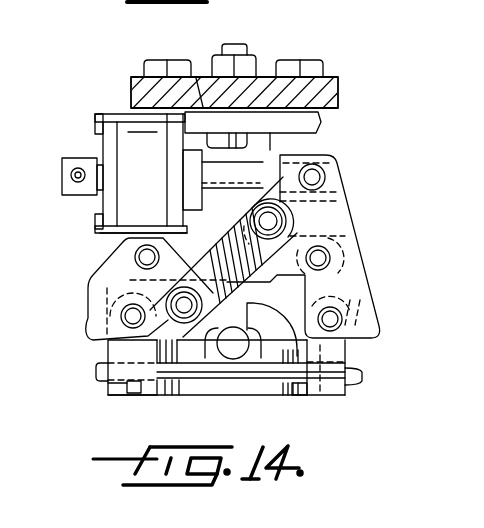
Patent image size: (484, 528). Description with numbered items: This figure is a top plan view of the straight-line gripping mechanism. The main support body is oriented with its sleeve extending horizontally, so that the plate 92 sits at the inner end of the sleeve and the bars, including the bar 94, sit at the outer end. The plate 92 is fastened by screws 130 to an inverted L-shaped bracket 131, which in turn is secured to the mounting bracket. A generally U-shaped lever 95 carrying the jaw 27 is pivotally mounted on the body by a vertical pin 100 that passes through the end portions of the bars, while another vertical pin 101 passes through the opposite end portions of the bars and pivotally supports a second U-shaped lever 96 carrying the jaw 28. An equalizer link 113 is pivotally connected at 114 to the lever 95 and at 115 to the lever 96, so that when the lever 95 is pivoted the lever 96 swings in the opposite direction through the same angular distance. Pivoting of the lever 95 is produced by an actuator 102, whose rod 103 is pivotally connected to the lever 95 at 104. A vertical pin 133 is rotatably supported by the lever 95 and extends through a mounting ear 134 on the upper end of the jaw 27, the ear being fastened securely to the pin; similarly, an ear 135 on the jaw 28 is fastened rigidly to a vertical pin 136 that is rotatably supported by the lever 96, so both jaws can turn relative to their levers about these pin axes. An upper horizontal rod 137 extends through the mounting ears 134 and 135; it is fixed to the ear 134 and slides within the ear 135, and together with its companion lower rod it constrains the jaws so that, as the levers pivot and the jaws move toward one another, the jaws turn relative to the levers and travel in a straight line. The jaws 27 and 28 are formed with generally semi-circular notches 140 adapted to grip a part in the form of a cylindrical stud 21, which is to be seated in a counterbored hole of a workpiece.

The screws 130 is at (253, 62).
The inverted L-shaped bracket 131 is at (200, 83).
The actuator 102 is at (124, 108).
The plate 92 is at (338, 92).
The rod 103 is at (257, 200).
The pivotal connection 104 is at (332, 165).
The bar 94 is at (172, 231).
The equalizer link 113 is at (214, 253).
The pivotal connection 114 is at (286, 219).
The U-shaped lever 95 is at (357, 236).
The pin 101 is at (135, 257).
The U-shaped lever 96 is at (100, 272).
The pin 100 is at (331, 257).
The pivotal connection 115 is at (172, 304).
The pin 133 is at (342, 313).
The pin 136 is at (126, 323).
The mounting ear 134 is at (357, 352).
The horizontal rod 137 is at (100, 372).
The ear 135 is at (112, 395).
The jaw 28 is at (190, 353).
The semi-circular notches 140 is at (205, 380).
The cylindrical stud 21 is at (222, 366).
The jaw 27 is at (322, 372).